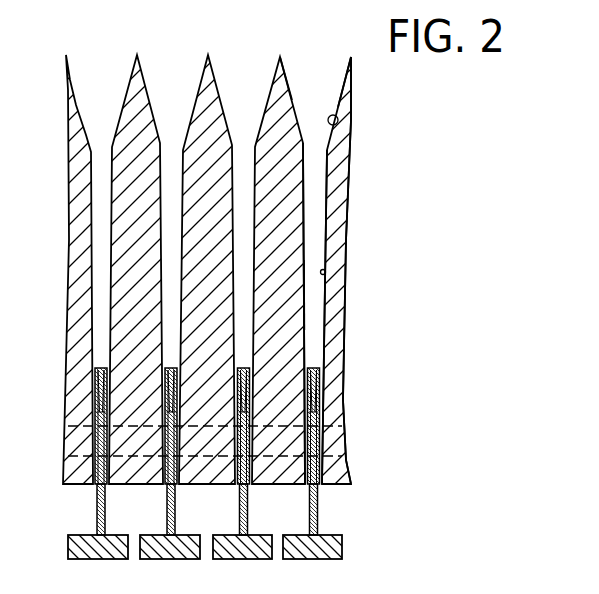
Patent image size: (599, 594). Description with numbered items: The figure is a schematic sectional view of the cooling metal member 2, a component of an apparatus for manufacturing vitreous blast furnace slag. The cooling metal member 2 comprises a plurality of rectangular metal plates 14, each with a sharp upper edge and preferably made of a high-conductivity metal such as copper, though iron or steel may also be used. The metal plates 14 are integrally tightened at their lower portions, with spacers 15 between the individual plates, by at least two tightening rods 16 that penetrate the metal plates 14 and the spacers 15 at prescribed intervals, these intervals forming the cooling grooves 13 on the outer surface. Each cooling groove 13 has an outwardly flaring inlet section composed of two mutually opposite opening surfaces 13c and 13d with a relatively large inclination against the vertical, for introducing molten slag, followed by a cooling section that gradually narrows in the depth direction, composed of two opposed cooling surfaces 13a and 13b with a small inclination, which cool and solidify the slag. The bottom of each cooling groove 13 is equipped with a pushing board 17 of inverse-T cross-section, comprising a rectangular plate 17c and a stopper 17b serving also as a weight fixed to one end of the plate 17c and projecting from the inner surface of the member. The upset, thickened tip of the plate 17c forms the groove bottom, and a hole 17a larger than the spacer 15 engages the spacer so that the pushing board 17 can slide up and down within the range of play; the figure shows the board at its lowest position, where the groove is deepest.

The cooling metal member 2 is at (352, 170).
The cooling groove 13 is at (312, 238).
The cooling surface 13a is at (308, 295).
The cooling surface 13b is at (326, 272).
The opening surface 13c is at (287, 86).
The opening surface 13d is at (338, 124).
The metal plate 14 is at (292, 208).
The spacer 15 is at (94, 413).
The tightening rod 16 is at (334, 427).
The pushing board 17 is at (177, 497).
The hole 17a is at (96, 386).
The stopper 17b is at (342, 542).
The plate 17c is at (318, 376).